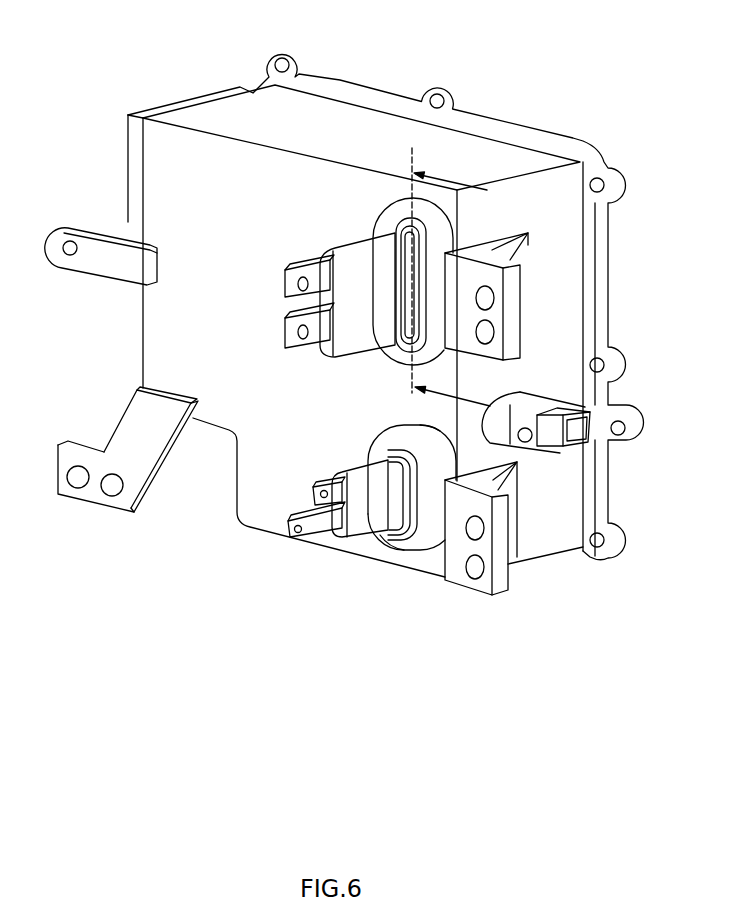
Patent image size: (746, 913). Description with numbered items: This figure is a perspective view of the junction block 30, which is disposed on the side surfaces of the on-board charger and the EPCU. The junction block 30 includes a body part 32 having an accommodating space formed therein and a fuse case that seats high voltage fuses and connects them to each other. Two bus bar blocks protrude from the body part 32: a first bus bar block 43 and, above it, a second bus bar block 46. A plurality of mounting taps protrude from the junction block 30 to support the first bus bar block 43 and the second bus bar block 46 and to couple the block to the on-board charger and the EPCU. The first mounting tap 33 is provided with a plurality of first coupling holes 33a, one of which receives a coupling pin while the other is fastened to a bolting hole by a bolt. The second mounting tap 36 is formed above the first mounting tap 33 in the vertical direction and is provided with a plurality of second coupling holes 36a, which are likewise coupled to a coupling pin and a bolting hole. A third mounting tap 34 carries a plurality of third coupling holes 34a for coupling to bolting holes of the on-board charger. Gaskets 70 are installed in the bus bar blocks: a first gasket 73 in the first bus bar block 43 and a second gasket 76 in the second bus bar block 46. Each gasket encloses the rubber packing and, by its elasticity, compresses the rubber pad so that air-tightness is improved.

The junction block 30 is at (128, 26).
The body part 32 is at (218, 115).
The first mounting tap 33 is at (518, 466).
The first coupling holes 33a is at (475, 528).
The third mounting tap 34 is at (143, 463).
The third coupling holes 34a is at (112, 485).
The second mounting tap 36 is at (528, 237).
The second coupling holes 36a is at (485, 298).
The first bus bar block 43 is at (311, 441).
The second bus bar block 46 is at (318, 233).
The gaskets 70 is at (487, 677).
The first gasket 73 is at (403, 547).
The second gasket 76 is at (425, 372).